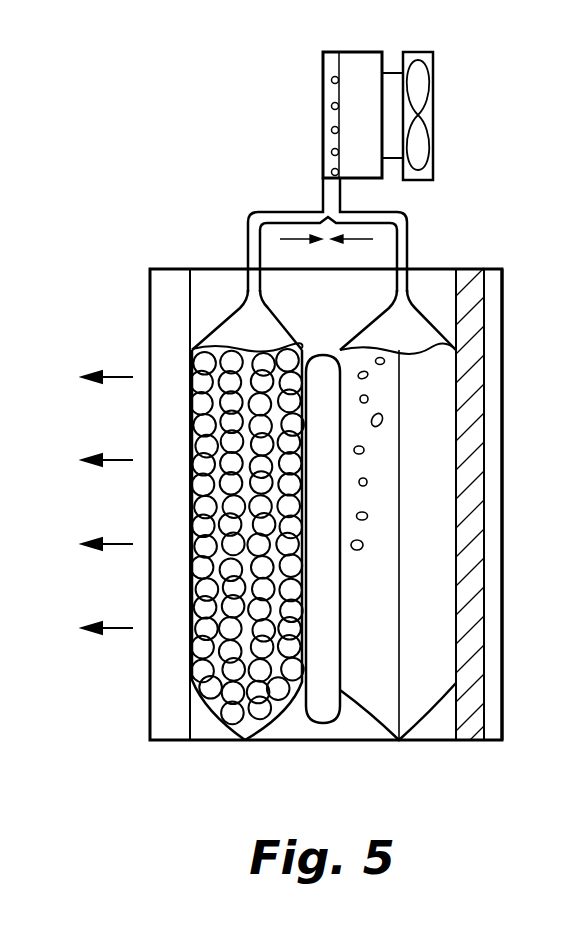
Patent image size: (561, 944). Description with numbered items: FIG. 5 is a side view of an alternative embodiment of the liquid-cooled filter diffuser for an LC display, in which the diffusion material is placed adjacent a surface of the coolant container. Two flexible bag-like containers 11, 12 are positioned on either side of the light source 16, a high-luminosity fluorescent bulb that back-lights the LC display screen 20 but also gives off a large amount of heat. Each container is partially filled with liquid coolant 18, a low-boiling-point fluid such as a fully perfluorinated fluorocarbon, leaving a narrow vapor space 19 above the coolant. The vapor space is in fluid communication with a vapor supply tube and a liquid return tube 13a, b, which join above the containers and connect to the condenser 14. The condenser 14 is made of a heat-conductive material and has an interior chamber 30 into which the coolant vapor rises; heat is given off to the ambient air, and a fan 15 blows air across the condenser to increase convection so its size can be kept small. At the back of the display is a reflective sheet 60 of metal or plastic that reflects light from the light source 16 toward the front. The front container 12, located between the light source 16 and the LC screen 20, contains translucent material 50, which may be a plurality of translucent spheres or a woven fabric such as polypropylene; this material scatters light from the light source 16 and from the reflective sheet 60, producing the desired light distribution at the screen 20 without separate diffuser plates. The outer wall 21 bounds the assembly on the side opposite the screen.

The container 11 is at (420, 710).
The front container 12 is at (263, 735).
The vapor supply tube and liquid return tube 13a, b is at (412, 223).
The condenser 14 is at (340, 52).
The fan 15 is at (425, 62).
The light source 16 is at (323, 539).
The liquid coolant 18 is at (398, 541).
The vapor space 19 is at (410, 322).
The LC display screen 20 is at (177, 278).
The outer wall 21 is at (503, 360).
The interior chamber 30 is at (333, 93).
The translucent material 50 is at (273, 713).
The reflective sheet 60 is at (472, 502).